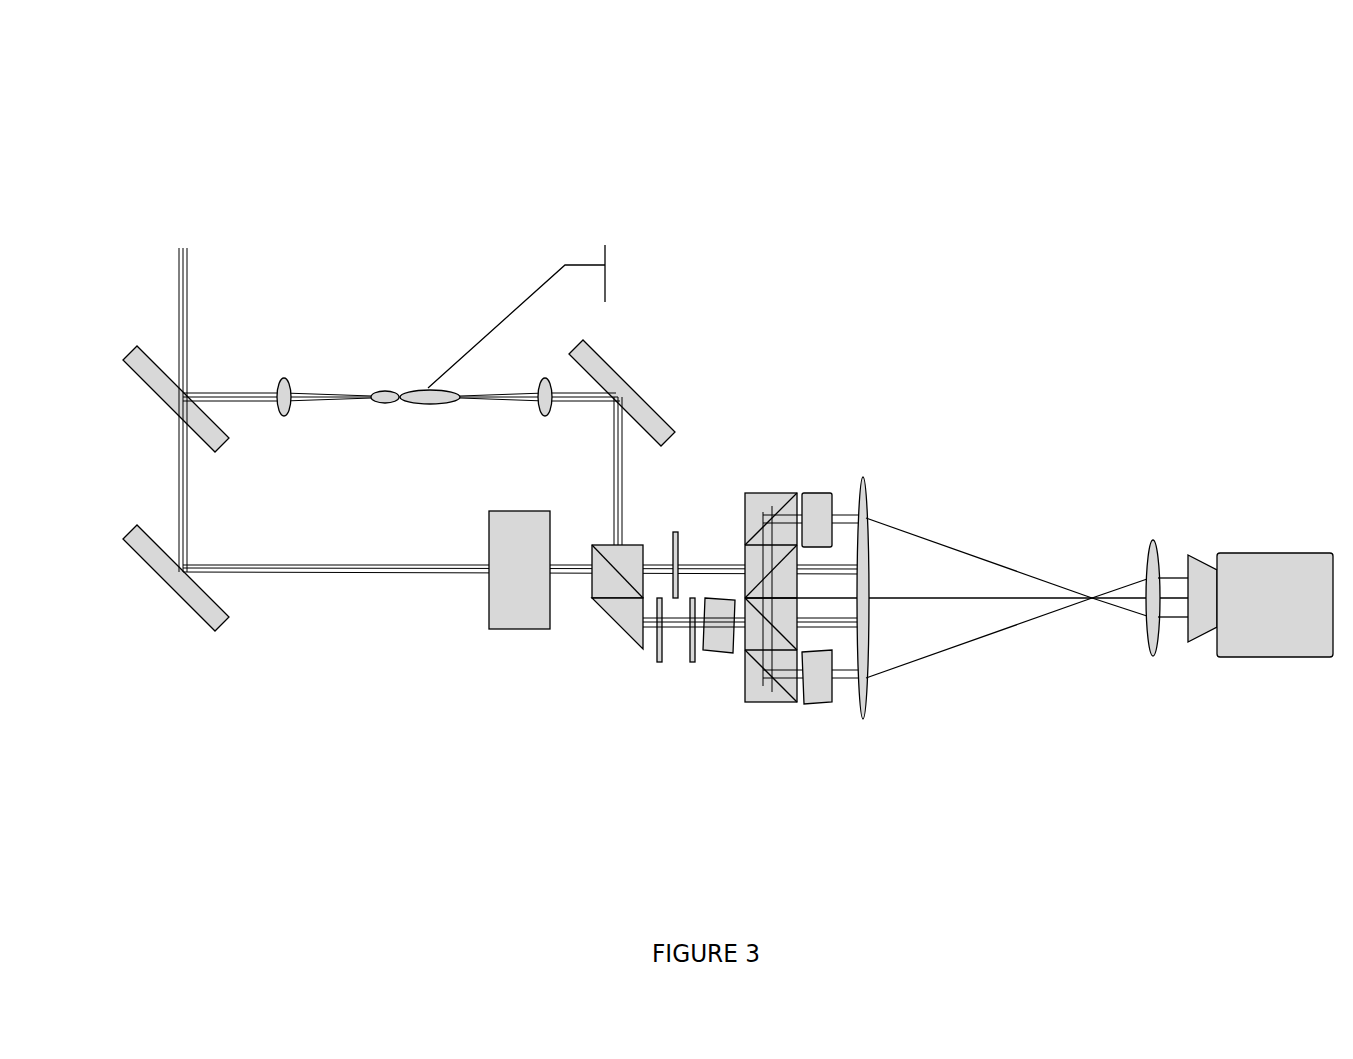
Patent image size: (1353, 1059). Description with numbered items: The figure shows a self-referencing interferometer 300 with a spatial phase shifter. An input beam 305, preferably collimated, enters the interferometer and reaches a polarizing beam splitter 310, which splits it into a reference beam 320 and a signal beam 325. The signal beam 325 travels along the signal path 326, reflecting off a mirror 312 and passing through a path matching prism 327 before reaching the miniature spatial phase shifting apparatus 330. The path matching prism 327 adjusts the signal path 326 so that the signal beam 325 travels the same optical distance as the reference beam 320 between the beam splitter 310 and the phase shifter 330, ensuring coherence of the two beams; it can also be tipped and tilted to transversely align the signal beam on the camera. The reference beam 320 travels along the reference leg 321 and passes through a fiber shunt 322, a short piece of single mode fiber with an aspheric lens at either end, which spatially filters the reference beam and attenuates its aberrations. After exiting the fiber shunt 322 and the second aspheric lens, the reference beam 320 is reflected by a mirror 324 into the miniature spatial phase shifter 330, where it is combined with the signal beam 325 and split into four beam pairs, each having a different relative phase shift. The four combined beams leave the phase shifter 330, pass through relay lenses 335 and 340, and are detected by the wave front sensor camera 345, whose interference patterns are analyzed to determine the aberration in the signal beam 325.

The self-referencing interferometer 300 is at (238, 146).
The input beam 305 is at (247, 273).
The polarizing beam splitter 310 is at (166, 399).
The mirror 312 is at (173, 578).
The reference beam 320 is at (231, 370).
The reference leg 321 is at (414, 420).
The fiber shunt 322 is at (599, 316).
The mirror 324 is at (640, 393).
The signal beam 325 is at (217, 551).
The signal path 326 is at (350, 609).
The path matching prism 327 is at (399, 770).
The miniature spatial phase shifting apparatus 330 is at (655, 723).
The relay lens 335 is at (966, 577).
The relay lens 340 is at (1140, 579).
The wave front sensor camera 345 is at (1260, 605).